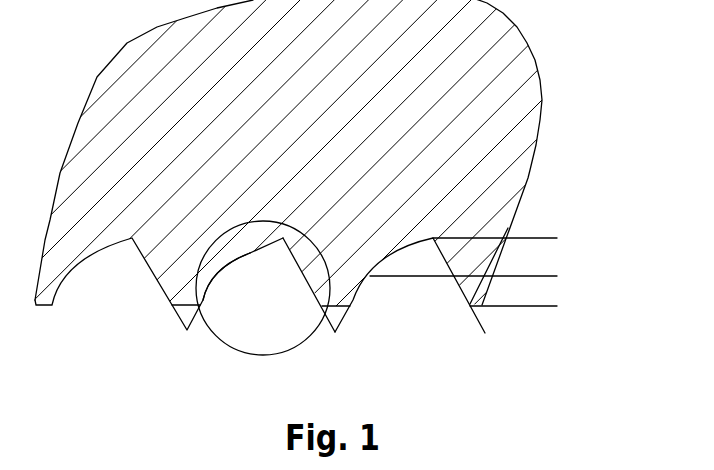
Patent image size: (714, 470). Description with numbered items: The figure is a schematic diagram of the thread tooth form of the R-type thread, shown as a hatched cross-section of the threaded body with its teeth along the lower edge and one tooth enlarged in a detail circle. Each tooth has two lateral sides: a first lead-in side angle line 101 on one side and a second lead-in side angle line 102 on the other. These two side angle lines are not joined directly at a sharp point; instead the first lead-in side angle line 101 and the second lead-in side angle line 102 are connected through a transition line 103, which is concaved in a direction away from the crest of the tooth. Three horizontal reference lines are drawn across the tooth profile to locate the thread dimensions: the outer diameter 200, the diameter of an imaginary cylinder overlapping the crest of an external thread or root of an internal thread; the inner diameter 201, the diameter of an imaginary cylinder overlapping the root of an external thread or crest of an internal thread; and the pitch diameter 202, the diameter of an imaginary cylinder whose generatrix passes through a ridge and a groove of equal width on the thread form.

The first lead-in side angle line 101 is at (207, 300).
The second lead-in side angle line 102 is at (302, 277).
The transition line 103 is at (250, 253).
The outer diameter 200 is at (553, 306).
The inner diameter 201 is at (537, 238).
The pitch diameter 202 is at (535, 276).